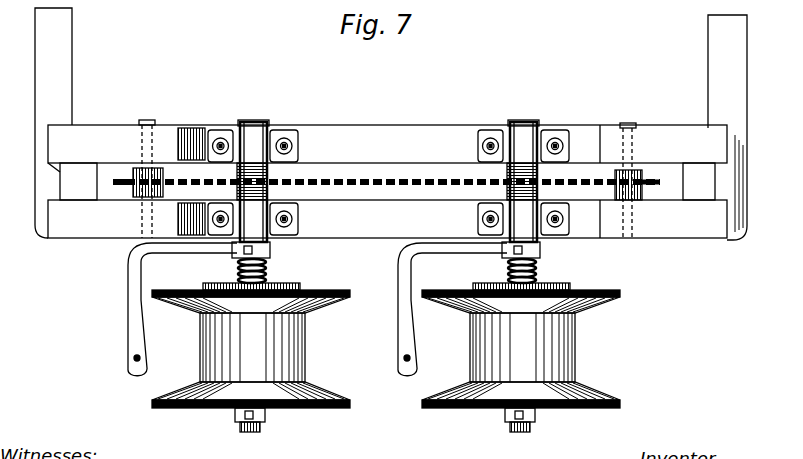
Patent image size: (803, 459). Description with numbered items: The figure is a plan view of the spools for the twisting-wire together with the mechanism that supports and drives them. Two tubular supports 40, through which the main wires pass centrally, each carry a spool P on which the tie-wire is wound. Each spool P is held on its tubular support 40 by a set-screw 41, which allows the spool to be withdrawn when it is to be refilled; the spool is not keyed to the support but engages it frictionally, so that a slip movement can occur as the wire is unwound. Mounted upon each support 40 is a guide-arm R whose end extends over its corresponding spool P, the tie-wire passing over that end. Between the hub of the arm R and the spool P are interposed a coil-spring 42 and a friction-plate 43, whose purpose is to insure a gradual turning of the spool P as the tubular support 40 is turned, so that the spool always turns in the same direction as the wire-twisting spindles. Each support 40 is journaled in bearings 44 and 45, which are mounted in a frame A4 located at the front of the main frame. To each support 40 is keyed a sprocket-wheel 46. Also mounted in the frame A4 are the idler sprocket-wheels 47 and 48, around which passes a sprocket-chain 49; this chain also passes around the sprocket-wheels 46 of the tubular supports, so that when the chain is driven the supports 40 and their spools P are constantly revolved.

The tubular support 40 is at (244, 433).
The set-screw 41 is at (268, 420).
The coil-spring 42 is at (268, 262).
The friction-plate 43 is at (302, 288).
The bearing 44 is at (283, 133).
The bearing 45 is at (298, 213).
The sprocket-wheel 46 is at (280, 172).
The idler sprocket-wheel 47 is at (131, 188).
The idler sprocket-wheel 48 is at (659, 186).
The sprocket-chain 49 is at (389, 190).
The guide-arm R is at (128, 291).
The spool P is at (386, 349).
The frame A4 is at (387, 181).